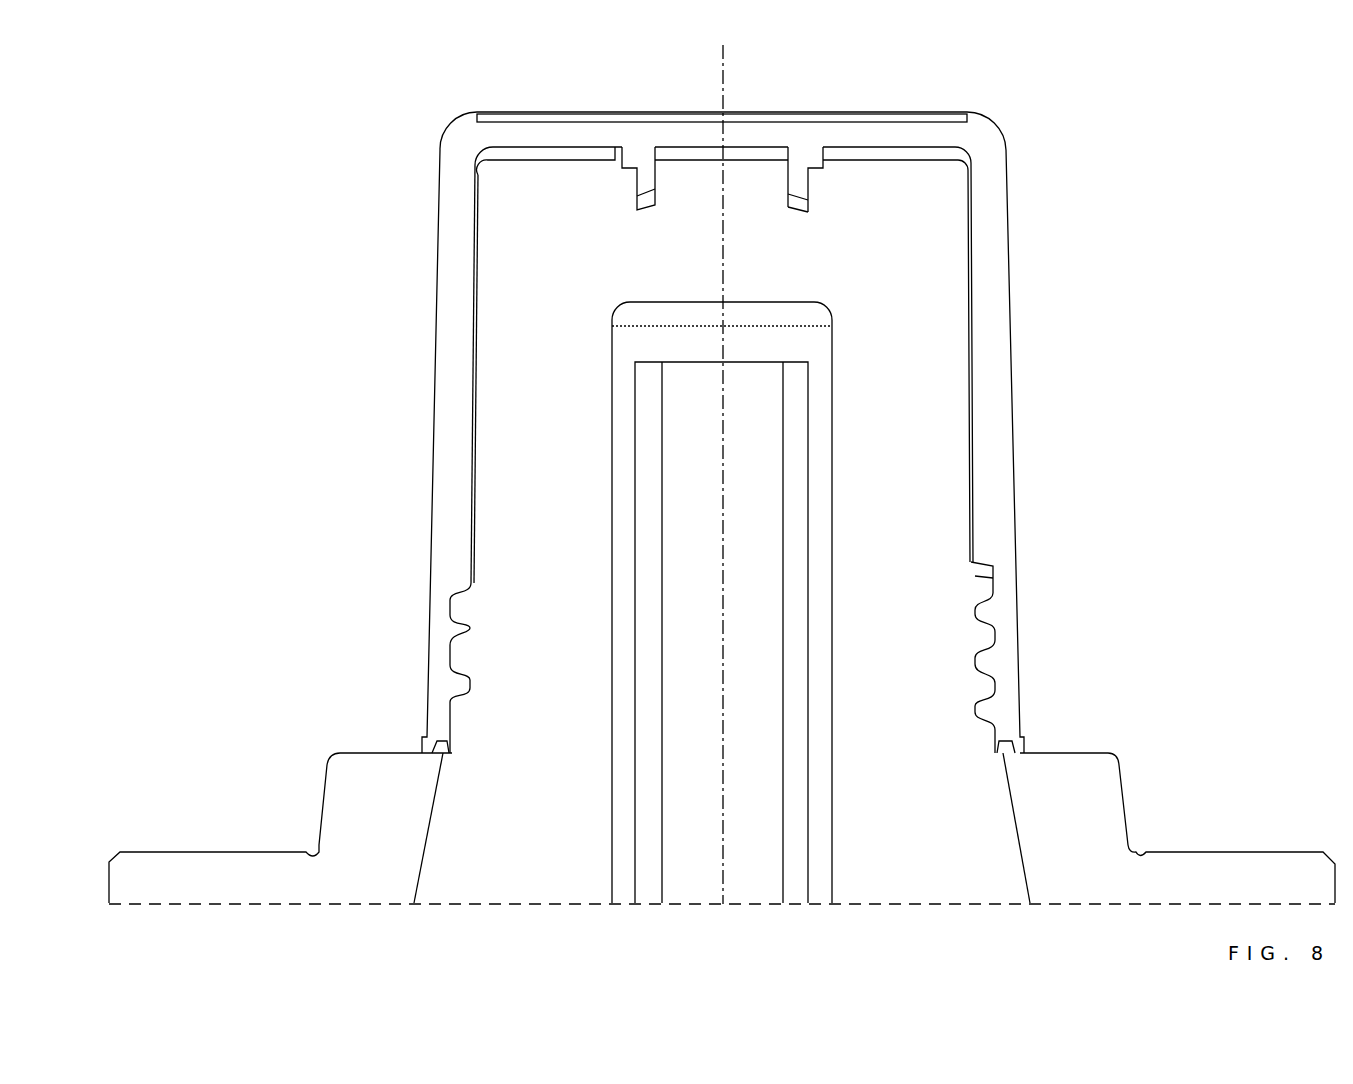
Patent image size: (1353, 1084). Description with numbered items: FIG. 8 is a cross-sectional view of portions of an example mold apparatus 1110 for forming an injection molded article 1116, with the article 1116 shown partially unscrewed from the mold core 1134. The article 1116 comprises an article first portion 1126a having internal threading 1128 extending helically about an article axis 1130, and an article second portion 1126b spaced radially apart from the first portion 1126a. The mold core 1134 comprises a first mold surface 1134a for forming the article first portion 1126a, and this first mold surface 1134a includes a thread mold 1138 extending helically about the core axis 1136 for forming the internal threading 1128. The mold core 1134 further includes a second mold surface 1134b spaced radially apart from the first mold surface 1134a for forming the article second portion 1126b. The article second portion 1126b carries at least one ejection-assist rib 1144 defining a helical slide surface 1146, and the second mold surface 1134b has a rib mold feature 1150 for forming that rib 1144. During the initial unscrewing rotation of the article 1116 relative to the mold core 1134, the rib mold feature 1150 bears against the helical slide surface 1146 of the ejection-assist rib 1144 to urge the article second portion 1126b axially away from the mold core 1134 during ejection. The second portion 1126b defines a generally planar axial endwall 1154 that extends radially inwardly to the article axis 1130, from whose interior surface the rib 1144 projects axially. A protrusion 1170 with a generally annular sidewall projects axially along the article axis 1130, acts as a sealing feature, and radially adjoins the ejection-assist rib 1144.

The mold apparatus 1110 is at (160, 811).
The molded article 1116 is at (392, 108).
The article first portion 1126a is at (472, 548).
The article second portion 1126b is at (675, 148).
The internal threading 1128 is at (470, 628).
The article axis 1130 is at (724, 62).
The mold core 1134 is at (723, 450).
The first mold surface 1134a is at (468, 578).
The second mold surface 1134b is at (612, 150).
The core axis 1136 is at (721, 632).
The thread mold 1138 is at (455, 632).
The ejection-assist rib 1144 is at (833, 171).
The helical slide surface 1146 is at (818, 168).
The rib mold feature 1150 is at (815, 160).
The axial endwall 1154 is at (907, 133).
The protrusion 1170 is at (632, 195).